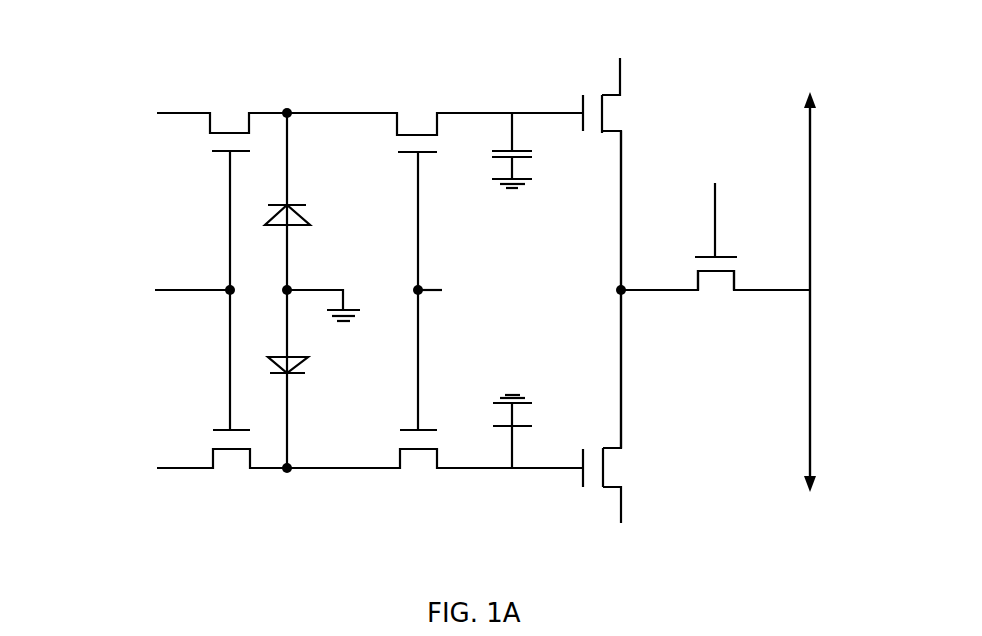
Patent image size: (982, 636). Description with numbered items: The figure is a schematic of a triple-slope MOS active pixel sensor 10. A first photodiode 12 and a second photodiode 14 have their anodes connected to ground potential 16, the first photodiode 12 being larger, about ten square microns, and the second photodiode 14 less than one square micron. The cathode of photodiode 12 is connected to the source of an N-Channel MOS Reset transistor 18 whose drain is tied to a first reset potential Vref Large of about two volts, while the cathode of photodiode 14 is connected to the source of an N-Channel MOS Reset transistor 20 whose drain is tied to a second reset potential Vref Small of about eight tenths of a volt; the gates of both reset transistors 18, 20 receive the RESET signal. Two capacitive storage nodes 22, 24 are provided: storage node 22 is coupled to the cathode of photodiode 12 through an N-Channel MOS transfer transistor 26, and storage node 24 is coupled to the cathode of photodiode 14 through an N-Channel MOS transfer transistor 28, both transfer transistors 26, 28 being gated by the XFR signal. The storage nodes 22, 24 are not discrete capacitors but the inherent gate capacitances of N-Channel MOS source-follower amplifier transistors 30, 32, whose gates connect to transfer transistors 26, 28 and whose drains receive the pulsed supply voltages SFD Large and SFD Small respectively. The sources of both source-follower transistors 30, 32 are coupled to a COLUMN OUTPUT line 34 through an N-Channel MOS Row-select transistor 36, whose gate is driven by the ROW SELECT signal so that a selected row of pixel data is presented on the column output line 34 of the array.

The triple-slope MOS active pixel sensor 10 is at (320, 50).
The first photodiode 12 is at (306, 200).
The second photodiode 14 is at (321, 357).
The ground potential 16 is at (325, 285).
The N-Channel MOS Reset transistor 18 is at (228, 120).
The N-Channel MOS Reset transistor 20 is at (231, 458).
The capacitive storage node 22 is at (487, 172).
The capacitive storage node 24 is at (513, 390).
The N-Channel MOS transfer transistor 26 is at (416, 125).
The N-Channel MOS transfer transistor 28 is at (419, 458).
The N-Channel MOS source-follower amplifier transistor 30 is at (606, 112).
The N-Channel MOS source-follower amplifier transistor 32 is at (613, 463).
The COLUMN OUTPUT line 34 is at (812, 280).
The N-Channel MOS Row-select transistor 36 is at (716, 292).